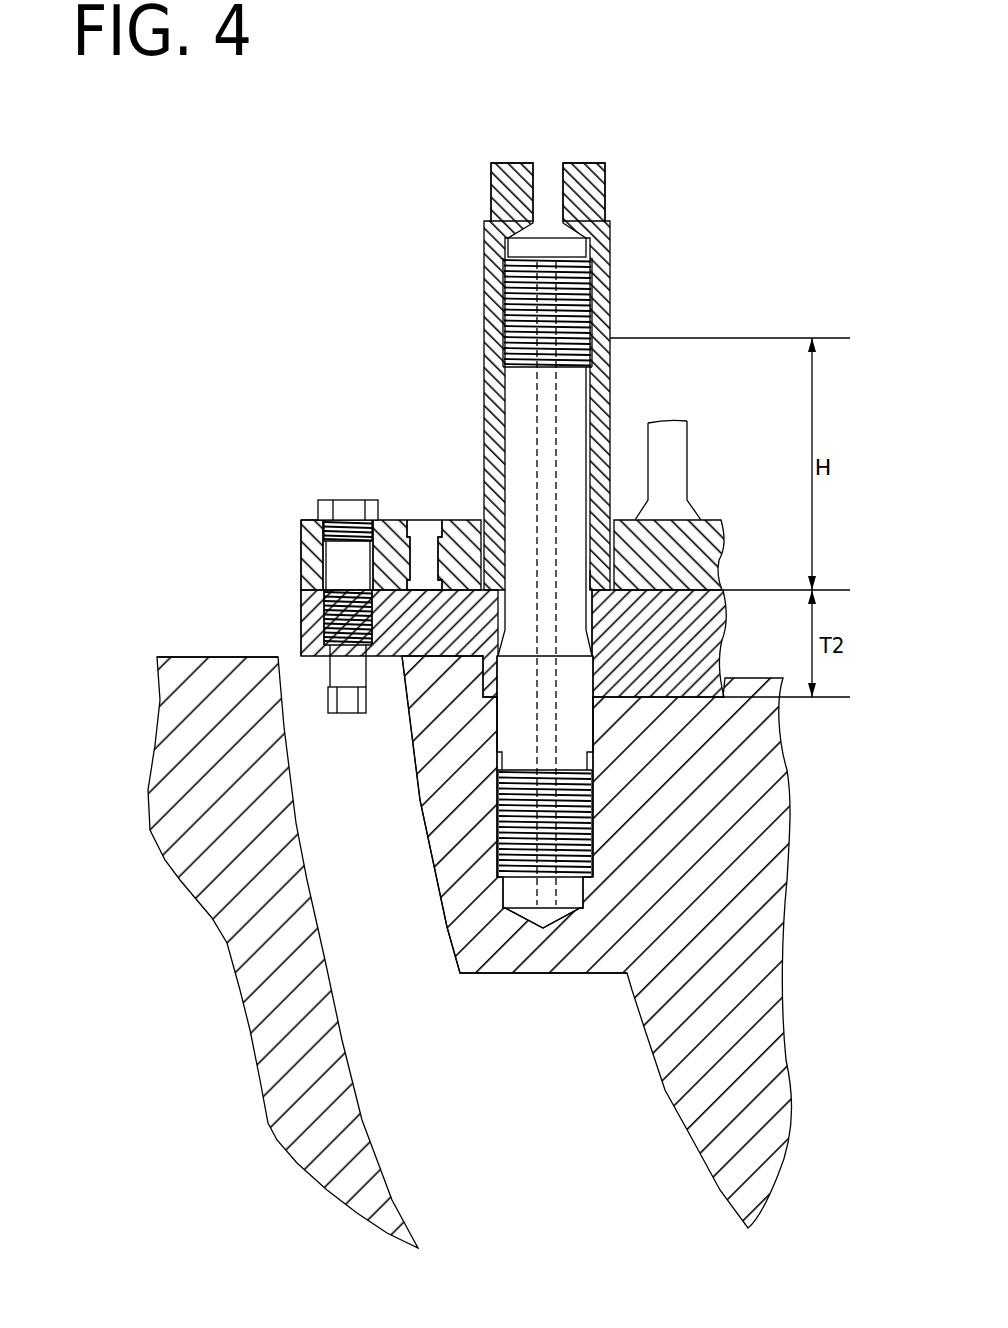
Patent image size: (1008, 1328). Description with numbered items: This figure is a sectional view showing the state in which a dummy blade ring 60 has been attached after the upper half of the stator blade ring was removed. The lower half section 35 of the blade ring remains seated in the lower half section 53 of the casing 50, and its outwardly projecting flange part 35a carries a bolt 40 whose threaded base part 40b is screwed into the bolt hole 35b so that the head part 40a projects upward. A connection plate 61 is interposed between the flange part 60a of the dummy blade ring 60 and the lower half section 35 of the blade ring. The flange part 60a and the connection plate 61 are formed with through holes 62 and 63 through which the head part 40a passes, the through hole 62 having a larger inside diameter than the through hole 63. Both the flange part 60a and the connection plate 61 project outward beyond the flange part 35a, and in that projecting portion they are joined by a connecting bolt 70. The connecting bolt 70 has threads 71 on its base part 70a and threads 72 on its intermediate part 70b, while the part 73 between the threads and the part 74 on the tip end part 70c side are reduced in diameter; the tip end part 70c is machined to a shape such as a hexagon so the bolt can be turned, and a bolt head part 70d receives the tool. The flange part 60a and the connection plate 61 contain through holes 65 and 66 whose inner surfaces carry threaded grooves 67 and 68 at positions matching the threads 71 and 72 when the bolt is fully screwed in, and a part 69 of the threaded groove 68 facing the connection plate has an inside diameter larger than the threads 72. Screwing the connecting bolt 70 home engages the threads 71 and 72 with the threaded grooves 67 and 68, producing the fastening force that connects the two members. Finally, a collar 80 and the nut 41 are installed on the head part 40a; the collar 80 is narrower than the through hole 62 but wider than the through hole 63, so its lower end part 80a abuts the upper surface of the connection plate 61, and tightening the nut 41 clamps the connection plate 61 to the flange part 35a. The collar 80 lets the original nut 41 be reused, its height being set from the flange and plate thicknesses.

The lower half section of the blade ring 35 is at (668, 1070).
The flange part 35a is at (447, 837).
The bolt hole 35b is at (590, 705).
The bolt 40 is at (533, 583).
The head part 40a is at (575, 248).
The base part 40b is at (497, 877).
The nut 41 is at (490, 195).
The casing 50 is at (225, 655).
The lower half section of the casing 53 is at (180, 667).
The dummy blade ring 60 is at (725, 511).
The flange part of the dummy blade ring 60a is at (300, 534).
The connection plate 61 is at (278, 621).
The through hole 62 is at (612, 520).
The through hole 63 is at (588, 650).
The through hole 65 is at (326, 565).
The through hole 66 is at (340, 672).
The threaded groove 67 is at (300, 528).
The threaded groove 68 is at (300, 610).
The part of the threaded groove 69 is at (415, 530).
The connecting bolt 70 is at (346, 610).
The base part 70a is at (374, 521).
The intermediate part 70b is at (376, 630).
The tip end part 70c is at (342, 715).
The bolt head part 70d is at (352, 499).
The threads 71 is at (397, 494).
The threads 72 is at (364, 711).
The part between the threads 73 is at (322, 574).
The part on the tip end side 74 is at (316, 656).
The collar 80 is at (487, 398).
The lower end part of the collar 80a is at (595, 578).